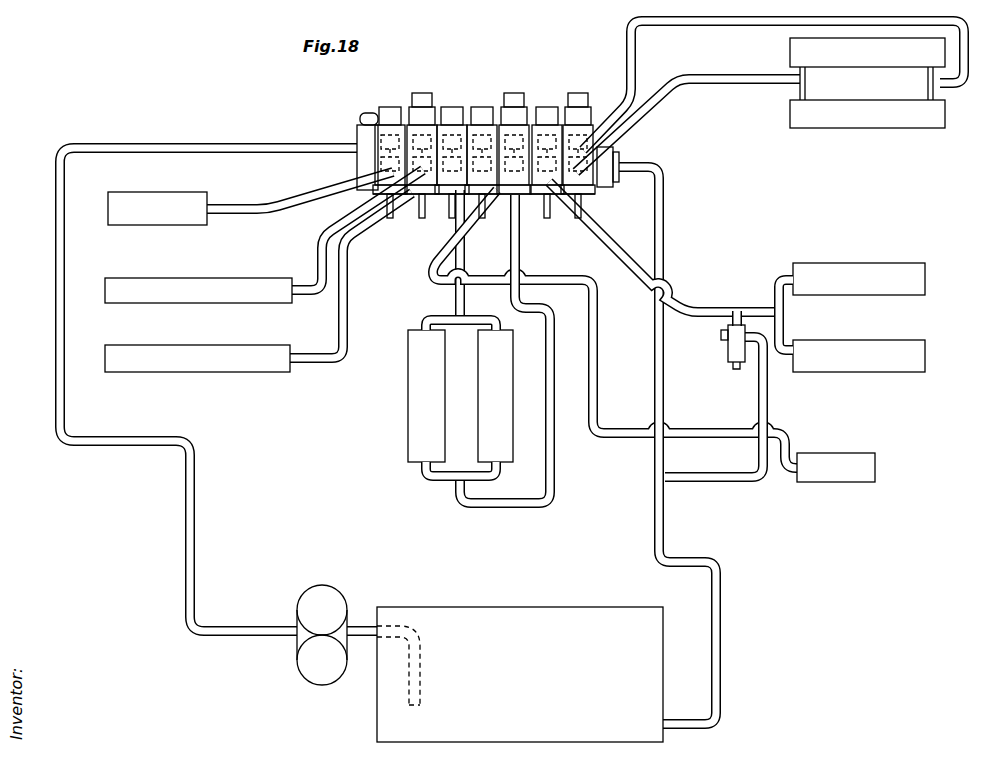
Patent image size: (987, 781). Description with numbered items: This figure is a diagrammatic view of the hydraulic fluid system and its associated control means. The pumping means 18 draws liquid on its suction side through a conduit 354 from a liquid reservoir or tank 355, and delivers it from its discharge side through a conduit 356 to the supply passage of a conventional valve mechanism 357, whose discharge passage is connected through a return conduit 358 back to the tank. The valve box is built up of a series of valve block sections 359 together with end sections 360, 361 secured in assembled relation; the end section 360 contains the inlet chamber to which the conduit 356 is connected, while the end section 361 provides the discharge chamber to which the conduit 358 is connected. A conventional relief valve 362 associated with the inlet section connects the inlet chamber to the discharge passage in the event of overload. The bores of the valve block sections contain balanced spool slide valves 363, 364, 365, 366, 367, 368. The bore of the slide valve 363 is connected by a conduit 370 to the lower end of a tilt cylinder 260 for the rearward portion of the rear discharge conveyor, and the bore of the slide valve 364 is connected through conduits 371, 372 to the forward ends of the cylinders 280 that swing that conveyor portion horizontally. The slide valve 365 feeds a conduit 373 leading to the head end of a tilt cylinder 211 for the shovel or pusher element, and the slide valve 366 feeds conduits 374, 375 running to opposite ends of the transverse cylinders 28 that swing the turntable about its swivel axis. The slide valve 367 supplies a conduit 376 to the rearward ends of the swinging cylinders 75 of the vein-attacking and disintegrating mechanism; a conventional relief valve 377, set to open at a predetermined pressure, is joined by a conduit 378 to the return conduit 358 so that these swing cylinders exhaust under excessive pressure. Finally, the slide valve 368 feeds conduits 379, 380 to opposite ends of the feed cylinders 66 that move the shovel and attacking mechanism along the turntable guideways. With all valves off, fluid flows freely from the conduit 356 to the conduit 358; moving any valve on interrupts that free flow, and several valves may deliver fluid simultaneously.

The pumping means 18 is at (322, 598).
The transverse cylinders 28 is at (490, 410).
The feed cylinders 66 is at (886, 60).
The swinging cylinders 75 is at (898, 290).
The tilt cylinder 211 is at (860, 477).
The tilt cylinder 260 is at (176, 192).
The cylinders 280 is at (252, 300).
The conduit 354 is at (362, 626).
The liquid reservoir or tank 355 is at (526, 606).
The conduit 356 is at (55, 290).
The valve mechanism 357 is at (378, 112).
The return conduit 358 is at (666, 240).
The valve block sections 359 is at (455, 138).
The end section 360 is at (362, 160).
The end section 361 is at (616, 160).
The relief valve 362 is at (359, 121).
The slide valve 363 is at (390, 107).
The slide valve 364 is at (425, 93).
The slide valve 365 is at (490, 122).
The slide valve 366 is at (547, 106).
The slide valve 367 is at (525, 128).
The slide valve 368 is at (588, 104).
The conduit 370 is at (268, 196).
The conduit 371 is at (338, 229).
The conduit 372 is at (347, 268).
The conduit 373 is at (597, 386).
The conduit 374 is at (455, 297).
The conduit 375 is at (551, 490).
The conduit 376 is at (626, 250).
The relief valve 377 is at (733, 346).
The conduit 378 is at (757, 480).
The conduit 379 is at (766, 82).
The conduit 380 is at (770, 22).